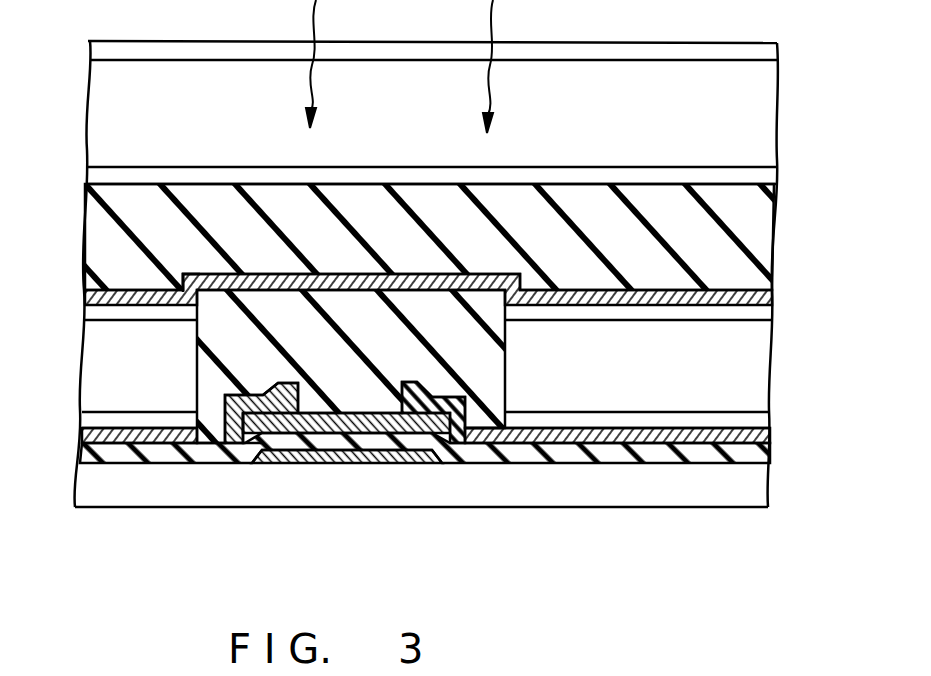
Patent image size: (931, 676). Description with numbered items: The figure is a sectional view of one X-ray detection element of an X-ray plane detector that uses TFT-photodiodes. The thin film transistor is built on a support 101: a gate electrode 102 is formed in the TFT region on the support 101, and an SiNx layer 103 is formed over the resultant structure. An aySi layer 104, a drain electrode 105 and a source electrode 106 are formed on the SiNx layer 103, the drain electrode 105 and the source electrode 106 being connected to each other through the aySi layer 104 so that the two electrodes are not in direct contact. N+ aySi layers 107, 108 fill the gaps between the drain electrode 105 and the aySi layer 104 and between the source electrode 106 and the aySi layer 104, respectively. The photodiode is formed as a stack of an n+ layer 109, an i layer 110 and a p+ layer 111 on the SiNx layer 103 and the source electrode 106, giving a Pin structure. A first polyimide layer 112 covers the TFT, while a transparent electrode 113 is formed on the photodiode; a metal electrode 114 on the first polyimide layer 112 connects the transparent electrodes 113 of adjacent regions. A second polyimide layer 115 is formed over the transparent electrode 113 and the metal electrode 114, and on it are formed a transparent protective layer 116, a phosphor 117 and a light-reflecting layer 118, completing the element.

The support 101 is at (770, 488).
The gate electrode 102 is at (395, 455).
The SiNx layer 103 is at (637, 452).
The aySi layer 104 is at (352, 423).
The drain electrode 105 is at (245, 427).
The source electrode 106 is at (553, 432).
The n+ aySi layer 107 is at (248, 433).
The n+ aySi layer 108 is at (438, 413).
The n+ layer 109 is at (770, 421).
The i layer 110 is at (770, 372).
The p+ layer 111 is at (770, 316).
The first polyimide layer 112 is at (205, 355).
The transparent electrode 113 is at (771, 292).
The metal electrode 114 is at (183, 273).
The second polyimide layer 115 is at (770, 231).
The transparent protective layer 116 is at (770, 173).
The phosphor 117 is at (770, 115).
The light-reflecting layer 118 is at (770, 55).